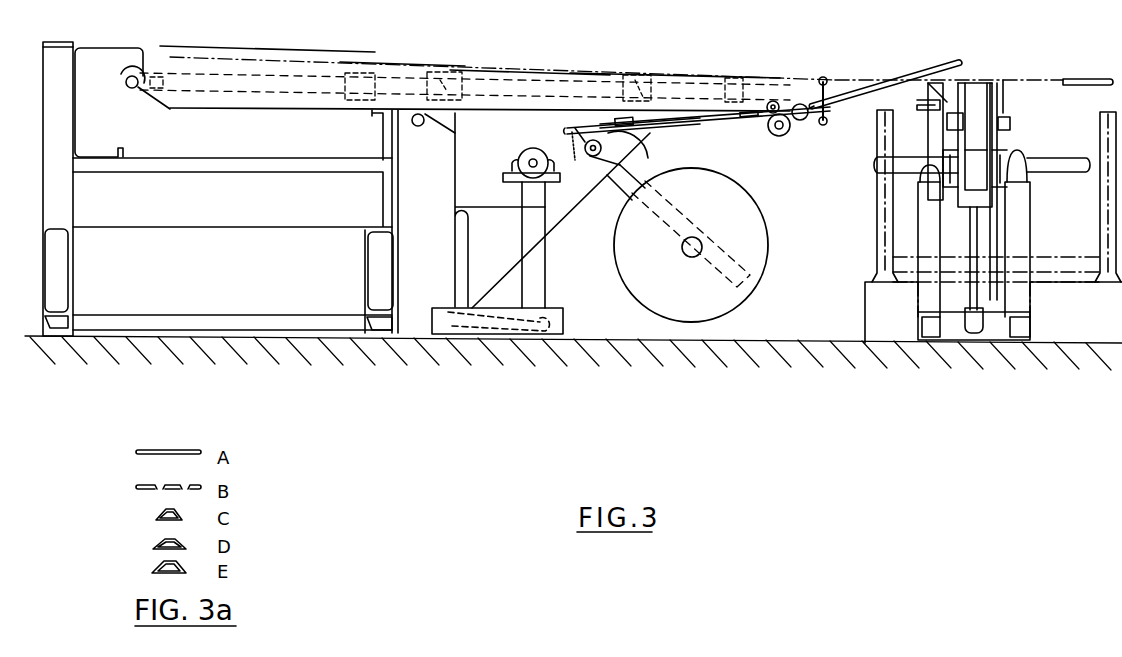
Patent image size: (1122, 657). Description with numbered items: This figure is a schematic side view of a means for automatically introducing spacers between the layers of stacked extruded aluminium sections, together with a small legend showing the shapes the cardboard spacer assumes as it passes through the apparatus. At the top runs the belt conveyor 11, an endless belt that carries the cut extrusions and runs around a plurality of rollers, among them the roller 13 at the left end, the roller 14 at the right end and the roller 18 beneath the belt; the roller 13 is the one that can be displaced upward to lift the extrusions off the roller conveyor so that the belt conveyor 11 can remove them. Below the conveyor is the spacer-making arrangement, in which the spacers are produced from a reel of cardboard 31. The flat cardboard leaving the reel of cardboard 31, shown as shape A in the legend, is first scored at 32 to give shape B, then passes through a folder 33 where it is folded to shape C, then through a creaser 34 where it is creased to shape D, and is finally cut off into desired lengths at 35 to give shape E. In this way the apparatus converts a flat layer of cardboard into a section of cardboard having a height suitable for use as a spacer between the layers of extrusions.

The belt conveyor 11 is at (440, 47).
The roller 13 is at (127, 92).
The roller 14 is at (826, 77).
The roller 18 is at (418, 126).
The reel of cardboard 31 is at (738, 187).
The scorer 32 is at (628, 140).
The folder 33 is at (745, 115).
The creaser 34 is at (800, 122).
The cutter 35 is at (830, 112).